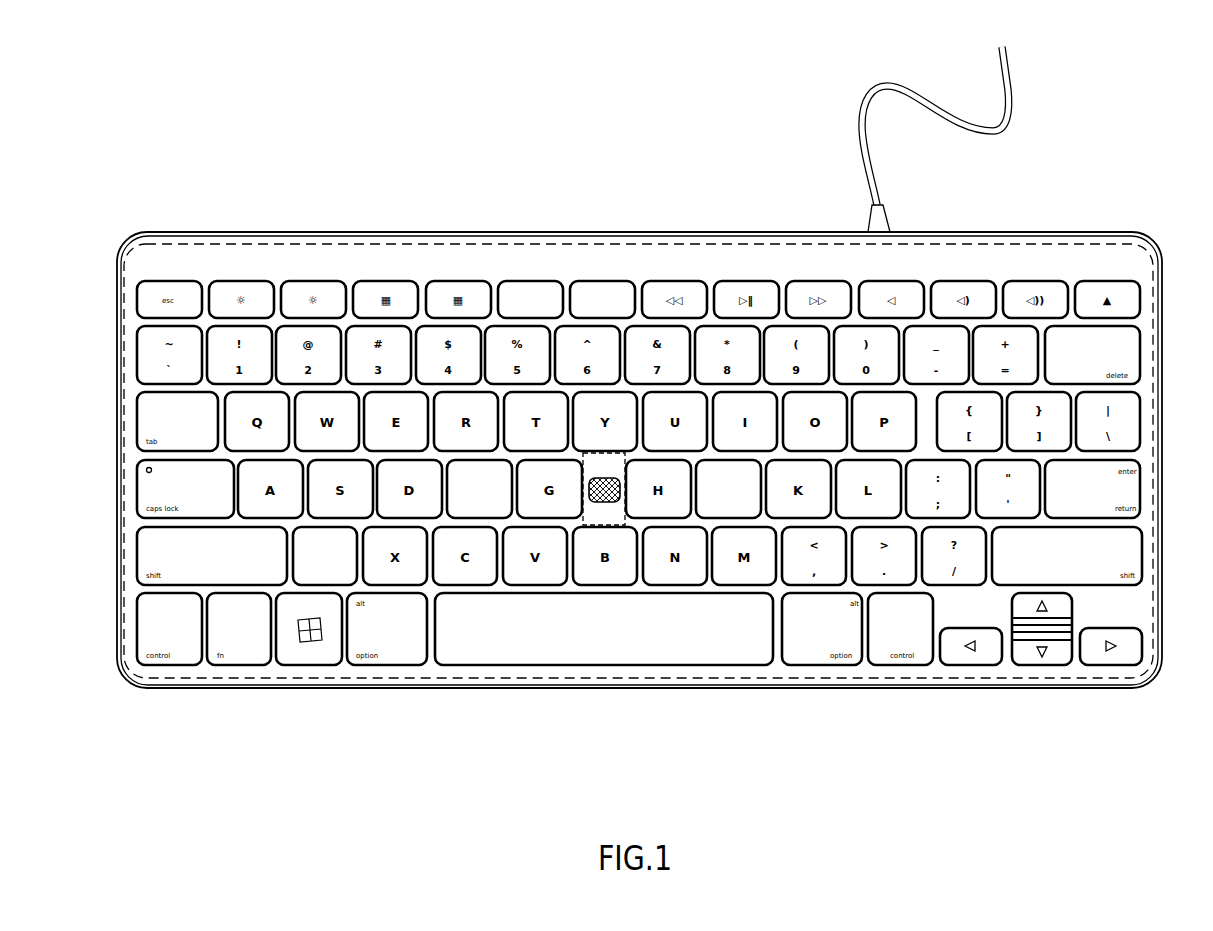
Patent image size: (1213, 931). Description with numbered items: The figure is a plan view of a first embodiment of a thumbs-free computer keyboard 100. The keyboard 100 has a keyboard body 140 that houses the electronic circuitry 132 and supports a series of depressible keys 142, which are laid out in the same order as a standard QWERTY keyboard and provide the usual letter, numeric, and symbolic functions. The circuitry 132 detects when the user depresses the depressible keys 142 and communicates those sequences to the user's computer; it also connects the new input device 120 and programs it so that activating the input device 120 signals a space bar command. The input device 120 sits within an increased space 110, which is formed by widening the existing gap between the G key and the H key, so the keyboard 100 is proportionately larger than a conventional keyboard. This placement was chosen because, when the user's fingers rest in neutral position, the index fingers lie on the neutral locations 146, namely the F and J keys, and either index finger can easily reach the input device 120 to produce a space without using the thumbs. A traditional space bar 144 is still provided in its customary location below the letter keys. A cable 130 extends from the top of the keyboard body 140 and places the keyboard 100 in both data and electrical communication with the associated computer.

The thumbs-free computer keyboard 100 is at (253, 207).
The increased space 110 is at (603, 515).
The input device 120 is at (622, 492).
The cable 130 is at (873, 158).
The circuitry 132 is at (1153, 327).
The keyboard body 140 is at (1040, 247).
The depressible keys 142 is at (310, 573).
The traditional space bar 144 is at (575, 655).
The neutral locations 146 is at (482, 503).